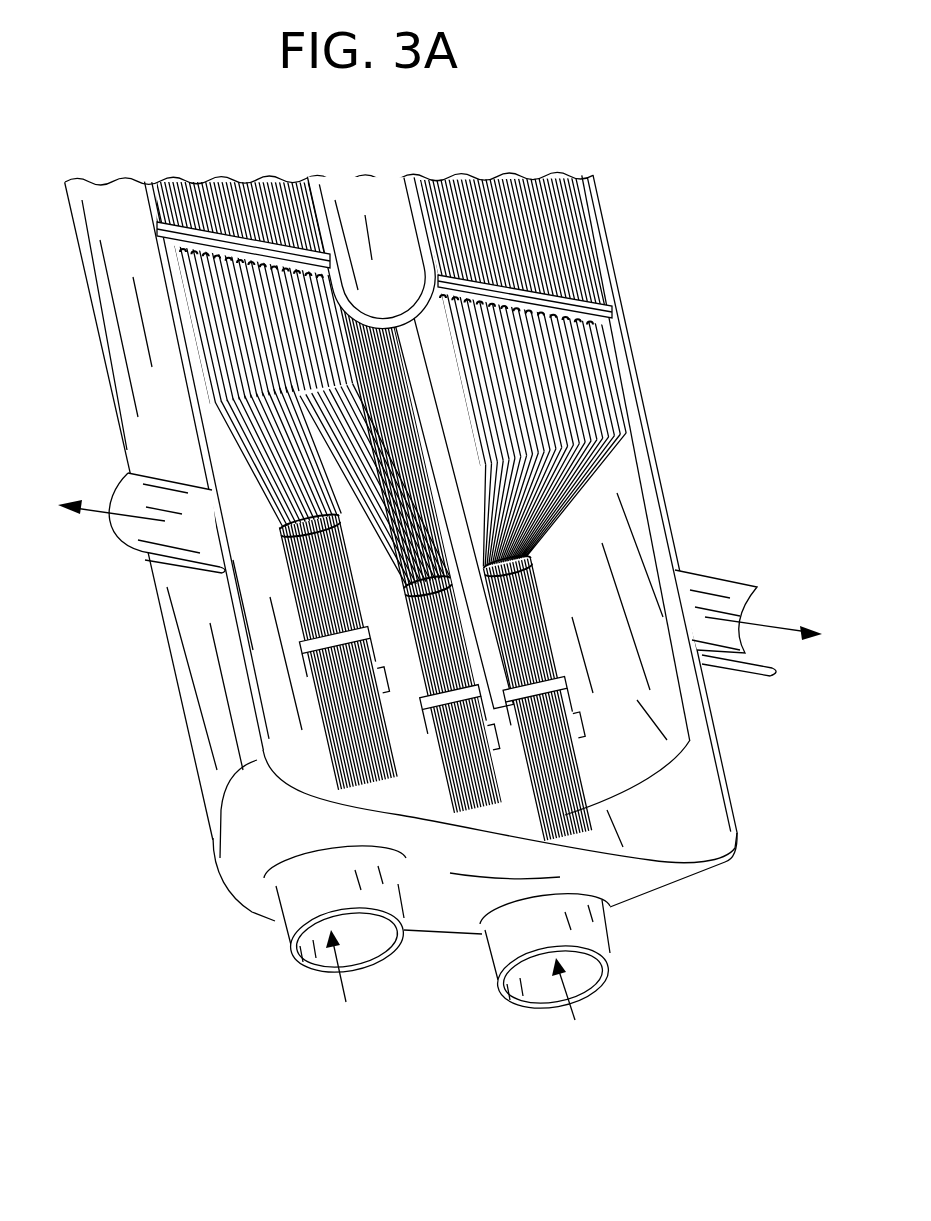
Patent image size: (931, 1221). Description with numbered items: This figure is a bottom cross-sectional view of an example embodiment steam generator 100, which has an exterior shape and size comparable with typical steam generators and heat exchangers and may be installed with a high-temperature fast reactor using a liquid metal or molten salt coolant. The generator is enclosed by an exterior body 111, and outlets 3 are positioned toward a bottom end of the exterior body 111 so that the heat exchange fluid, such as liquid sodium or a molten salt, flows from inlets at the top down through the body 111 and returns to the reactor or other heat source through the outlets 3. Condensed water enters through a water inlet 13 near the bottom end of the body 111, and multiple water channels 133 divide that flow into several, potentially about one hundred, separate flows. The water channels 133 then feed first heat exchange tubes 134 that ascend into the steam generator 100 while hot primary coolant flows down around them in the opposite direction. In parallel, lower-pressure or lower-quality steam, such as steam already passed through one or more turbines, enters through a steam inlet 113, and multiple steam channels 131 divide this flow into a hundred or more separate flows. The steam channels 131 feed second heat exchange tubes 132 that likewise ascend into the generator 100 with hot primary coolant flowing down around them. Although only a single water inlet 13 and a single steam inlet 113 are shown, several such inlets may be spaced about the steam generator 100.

The steam generator 100 is at (440, 560).
The exterior body 111 is at (643, 890).
The steam inlet 113 is at (372, 940).
The water inlet 13 is at (592, 970).
The outlets 3 is at (165, 565).
The steam channels 131 is at (323, 687).
The second heat exchange tubes 132 is at (258, 192).
The water channels 133 is at (563, 447).
The first heat exchange tubes 134 is at (512, 192).